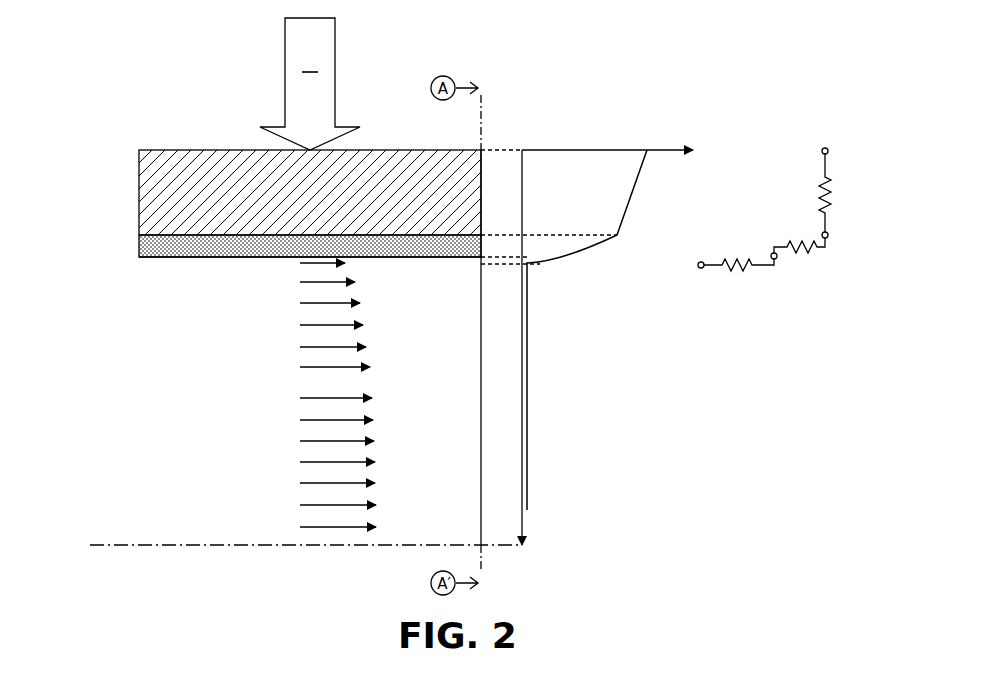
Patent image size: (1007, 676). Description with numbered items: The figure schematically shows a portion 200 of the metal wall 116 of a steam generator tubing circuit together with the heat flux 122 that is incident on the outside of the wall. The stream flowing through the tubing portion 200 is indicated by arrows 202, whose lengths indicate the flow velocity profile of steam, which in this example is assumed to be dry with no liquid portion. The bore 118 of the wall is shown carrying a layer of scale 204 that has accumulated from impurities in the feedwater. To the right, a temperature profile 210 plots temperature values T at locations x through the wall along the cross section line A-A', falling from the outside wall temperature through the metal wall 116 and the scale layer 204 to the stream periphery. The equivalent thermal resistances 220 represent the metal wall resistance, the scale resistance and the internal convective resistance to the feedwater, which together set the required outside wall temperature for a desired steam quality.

The wall portion 200 is at (303, 197).
The metal wall 116 is at (139, 190).
The scale layer 204 is at (139, 243).
The bore 118 is at (167, 236).
The heat flux 122 is at (284, 70).
The arrows indicating the stream 202 is at (333, 530).
The temperature profile 210 is at (589, 77).
The equivalent thermal resistances 220 is at (824, 114).